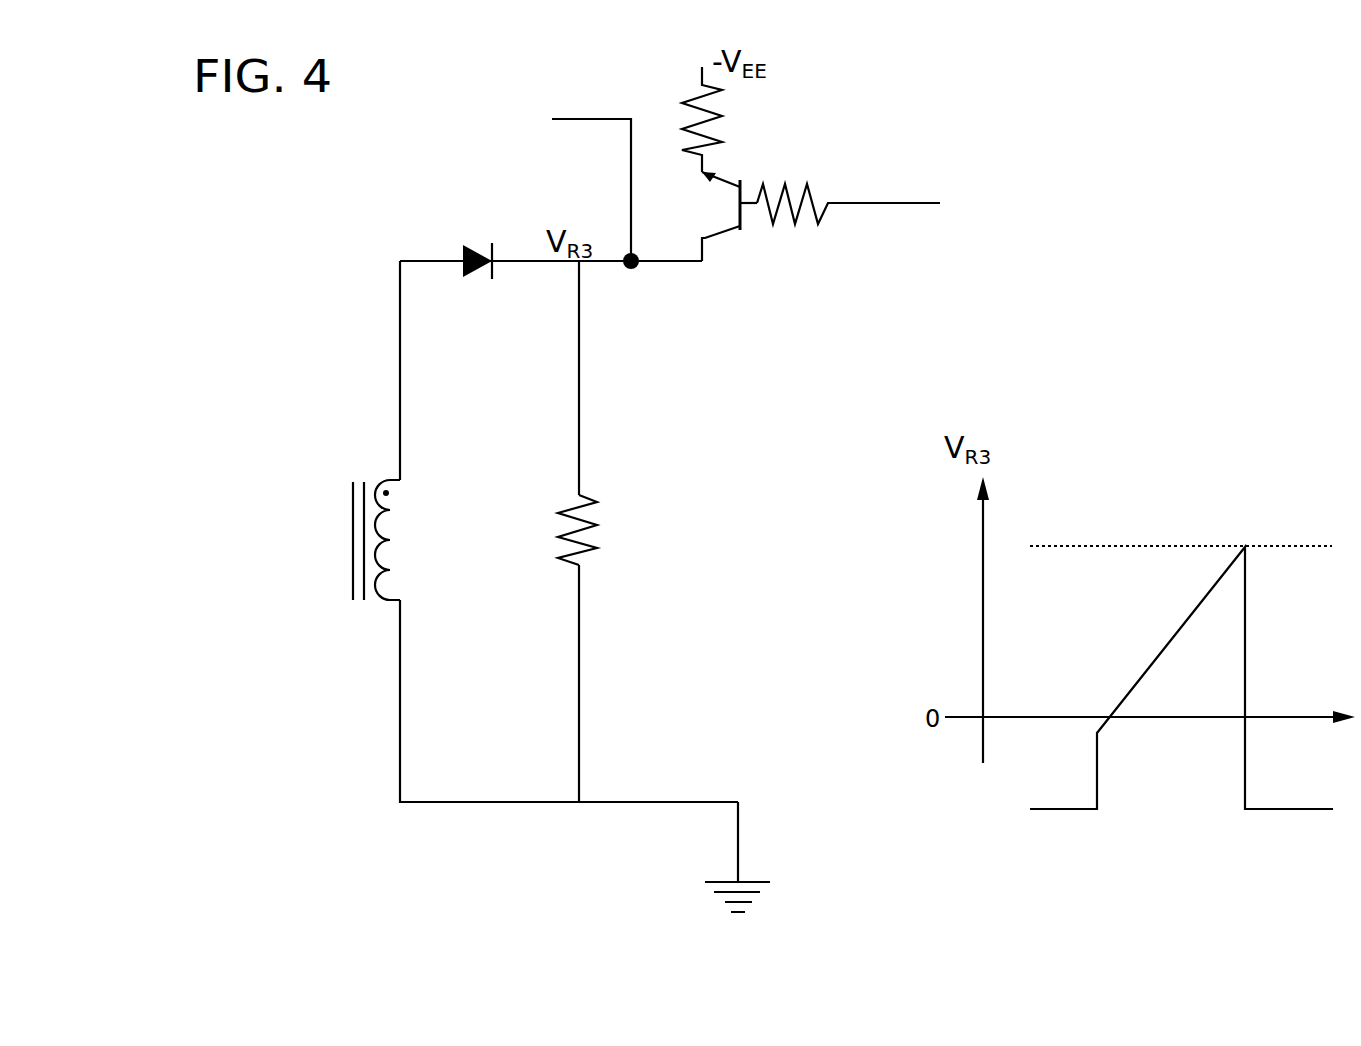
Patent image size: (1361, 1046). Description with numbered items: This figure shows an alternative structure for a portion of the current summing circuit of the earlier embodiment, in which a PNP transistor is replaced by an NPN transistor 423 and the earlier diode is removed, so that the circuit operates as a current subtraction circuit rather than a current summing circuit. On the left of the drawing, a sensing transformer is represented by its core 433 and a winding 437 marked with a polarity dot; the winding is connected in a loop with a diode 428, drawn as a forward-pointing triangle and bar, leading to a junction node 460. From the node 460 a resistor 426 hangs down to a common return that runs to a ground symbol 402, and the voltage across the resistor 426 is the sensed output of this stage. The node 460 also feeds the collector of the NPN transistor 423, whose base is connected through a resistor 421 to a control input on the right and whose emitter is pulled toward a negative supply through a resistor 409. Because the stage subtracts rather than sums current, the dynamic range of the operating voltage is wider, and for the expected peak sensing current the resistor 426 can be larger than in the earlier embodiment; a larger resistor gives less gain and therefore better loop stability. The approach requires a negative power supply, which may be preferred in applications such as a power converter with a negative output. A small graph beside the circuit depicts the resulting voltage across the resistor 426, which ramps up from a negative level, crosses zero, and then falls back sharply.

The ground 402 is at (760, 892).
The resistor 409 is at (718, 112).
The resistor 421 is at (788, 190).
The NPN transistor 423 is at (720, 230).
The resistor 426 is at (597, 522).
The diode 428 is at (475, 247).
The transformer 433 is at (350, 535).
The secondary winding 437 is at (383, 602).
The node 460 is at (636, 280).